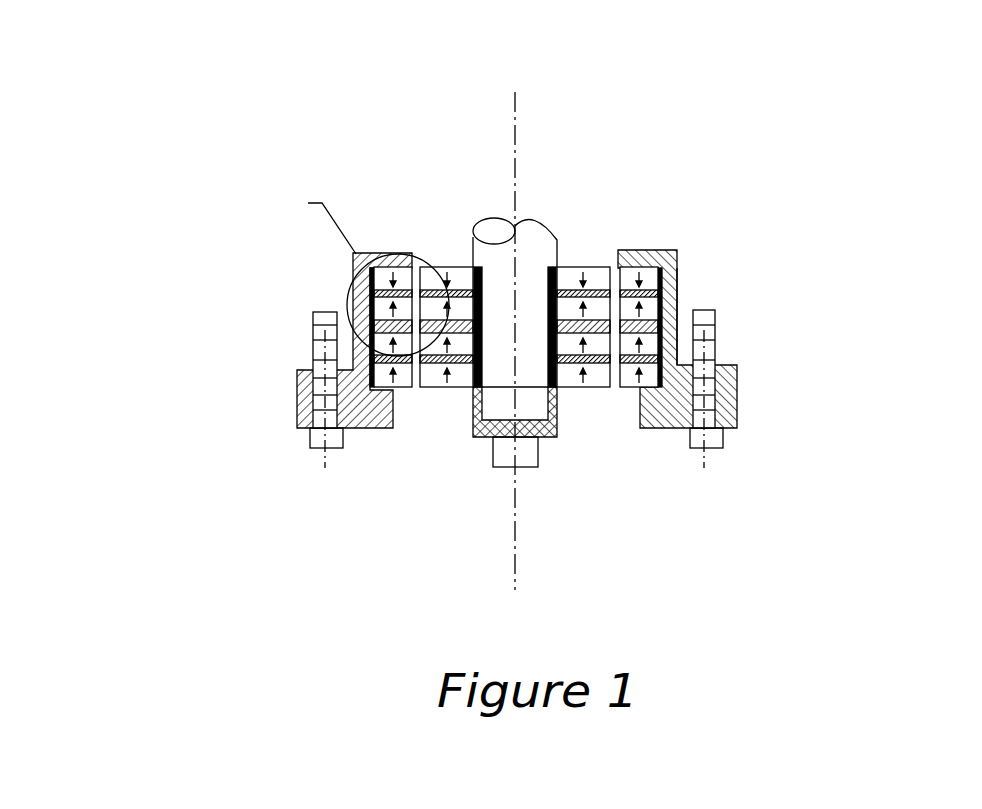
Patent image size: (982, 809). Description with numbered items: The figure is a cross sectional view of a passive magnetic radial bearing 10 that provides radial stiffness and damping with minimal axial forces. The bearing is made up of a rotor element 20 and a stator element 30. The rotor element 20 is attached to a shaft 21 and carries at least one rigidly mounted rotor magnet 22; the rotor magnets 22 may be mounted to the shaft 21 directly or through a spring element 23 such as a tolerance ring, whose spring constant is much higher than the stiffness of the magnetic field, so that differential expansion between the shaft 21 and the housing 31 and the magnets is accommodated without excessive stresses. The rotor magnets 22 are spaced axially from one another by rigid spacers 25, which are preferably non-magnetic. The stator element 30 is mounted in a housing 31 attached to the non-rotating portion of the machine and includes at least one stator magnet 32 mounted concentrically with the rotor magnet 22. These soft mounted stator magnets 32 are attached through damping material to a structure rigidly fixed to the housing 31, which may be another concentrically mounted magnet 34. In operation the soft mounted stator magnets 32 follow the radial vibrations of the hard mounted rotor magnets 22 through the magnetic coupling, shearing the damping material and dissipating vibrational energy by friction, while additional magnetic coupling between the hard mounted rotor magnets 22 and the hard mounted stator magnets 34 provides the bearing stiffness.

The radial bearing 10 is at (472, 299).
The rotor element 20 is at (568, 248).
The shaft 21 is at (497, 230).
The rotor magnet 22 is at (418, 395).
The spring element 23 is at (548, 266).
The rigid spacer 25 is at (600, 300).
The stator element 30 is at (690, 253).
The housing 31 is at (678, 300).
The stator magnet 32 is at (623, 308).
The hard mounted stator magnet 34 is at (415, 362).